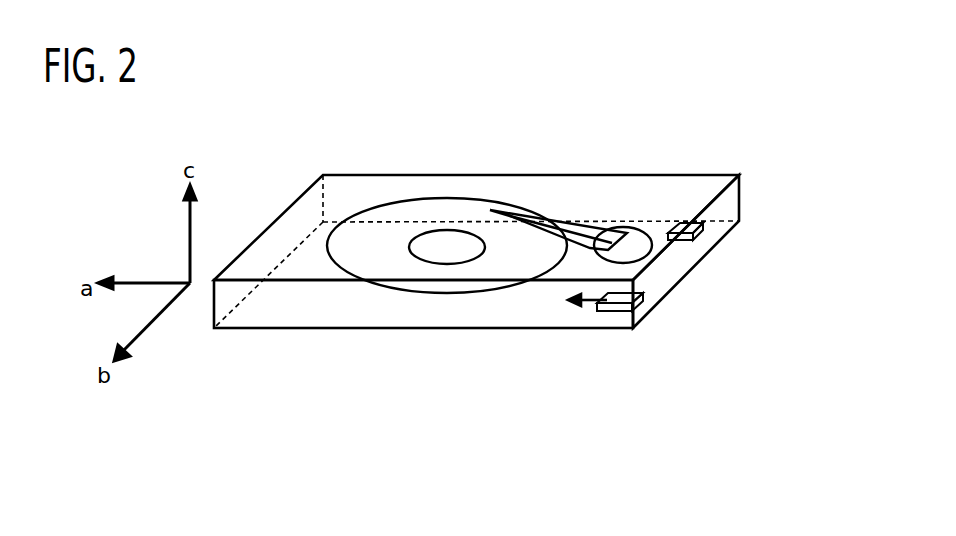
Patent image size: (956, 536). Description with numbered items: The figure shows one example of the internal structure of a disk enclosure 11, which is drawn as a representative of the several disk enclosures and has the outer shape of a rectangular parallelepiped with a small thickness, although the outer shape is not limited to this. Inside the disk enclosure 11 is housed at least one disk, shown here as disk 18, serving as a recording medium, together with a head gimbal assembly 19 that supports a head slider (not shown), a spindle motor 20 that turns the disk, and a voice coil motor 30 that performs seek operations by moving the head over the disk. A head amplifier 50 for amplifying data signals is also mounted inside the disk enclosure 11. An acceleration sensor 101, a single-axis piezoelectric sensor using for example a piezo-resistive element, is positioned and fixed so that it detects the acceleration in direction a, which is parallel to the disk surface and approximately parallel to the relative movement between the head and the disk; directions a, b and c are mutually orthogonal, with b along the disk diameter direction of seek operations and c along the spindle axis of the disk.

The disk enclosure 11 is at (293, 330).
The disk 18 is at (436, 212).
The head gimbal assembly 19 is at (592, 233).
The spindle motor 20 is at (435, 262).
The voice coil motor 30 is at (640, 248).
The head amplifier 50 is at (697, 233).
The acceleration sensor 101 is at (613, 311).